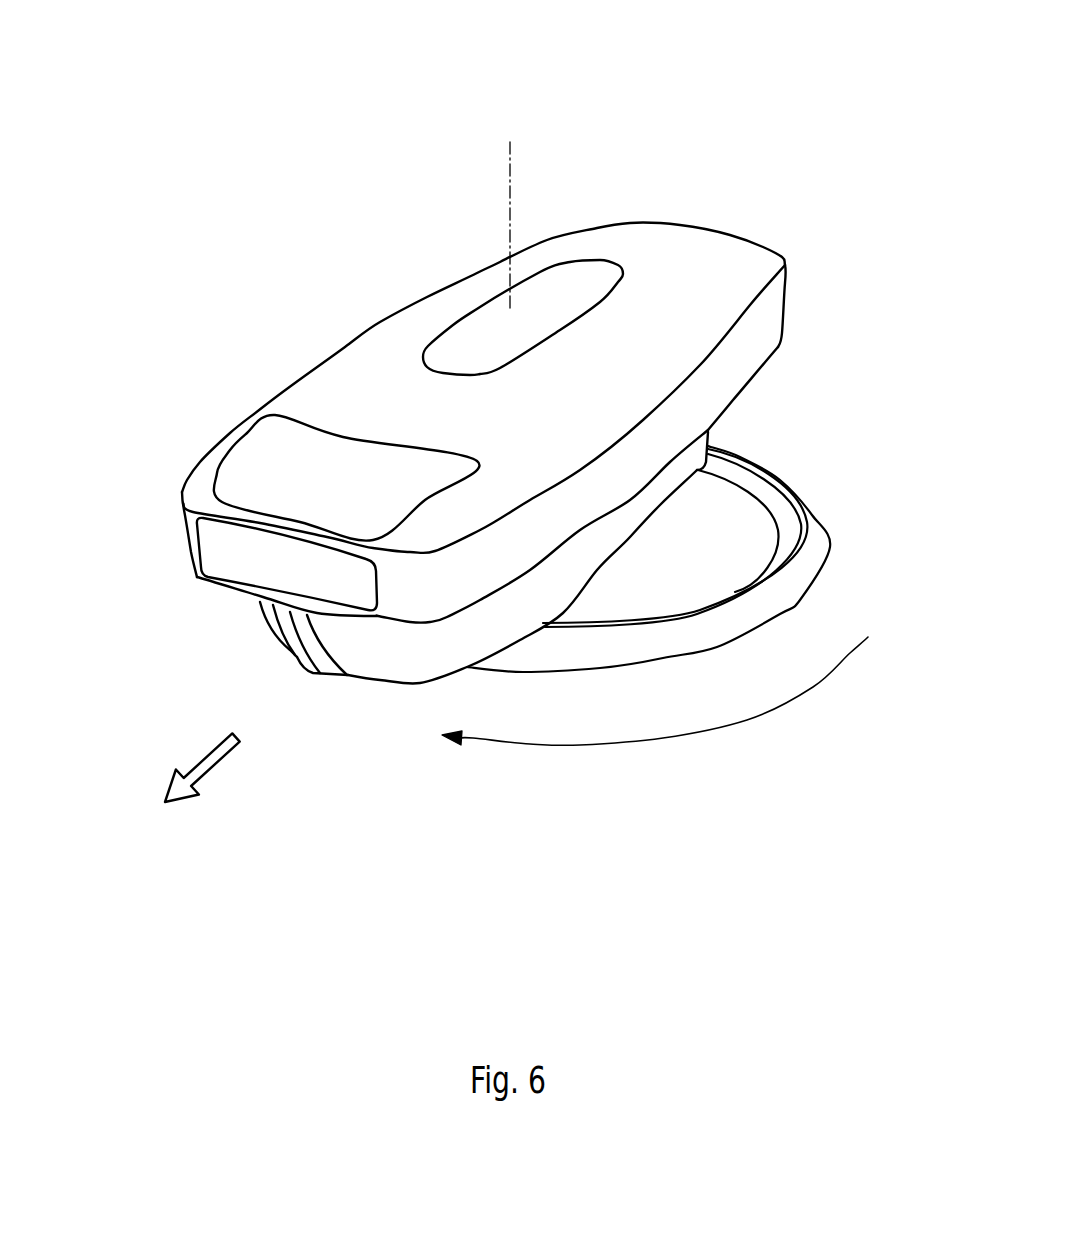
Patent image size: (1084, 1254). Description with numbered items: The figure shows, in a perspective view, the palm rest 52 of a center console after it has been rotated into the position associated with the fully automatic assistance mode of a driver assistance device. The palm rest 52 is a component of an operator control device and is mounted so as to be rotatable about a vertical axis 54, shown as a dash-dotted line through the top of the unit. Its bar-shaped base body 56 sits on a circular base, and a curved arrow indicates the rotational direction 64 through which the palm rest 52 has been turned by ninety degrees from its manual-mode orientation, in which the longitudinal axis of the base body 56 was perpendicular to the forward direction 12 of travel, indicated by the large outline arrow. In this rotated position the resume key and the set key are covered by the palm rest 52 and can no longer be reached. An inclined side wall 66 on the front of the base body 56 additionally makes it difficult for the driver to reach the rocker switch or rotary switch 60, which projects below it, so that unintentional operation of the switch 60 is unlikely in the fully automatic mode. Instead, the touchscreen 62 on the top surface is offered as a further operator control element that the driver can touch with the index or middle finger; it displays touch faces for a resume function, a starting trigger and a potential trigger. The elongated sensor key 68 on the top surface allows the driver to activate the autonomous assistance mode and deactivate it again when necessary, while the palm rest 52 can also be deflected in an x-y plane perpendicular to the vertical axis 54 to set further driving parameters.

The forward direction of travel 12 is at (210, 762).
The palm rest 52 is at (795, 170).
The vertical axis 54 is at (510, 177).
The bar-shaped base body 56 is at (755, 348).
The rocker switch or rotary switch 60 is at (275, 635).
The touchscreen 62 is at (265, 453).
The rotational direction 64 is at (612, 745).
The inclined side wall 66 is at (187, 540).
The sensor key 68 is at (478, 323).